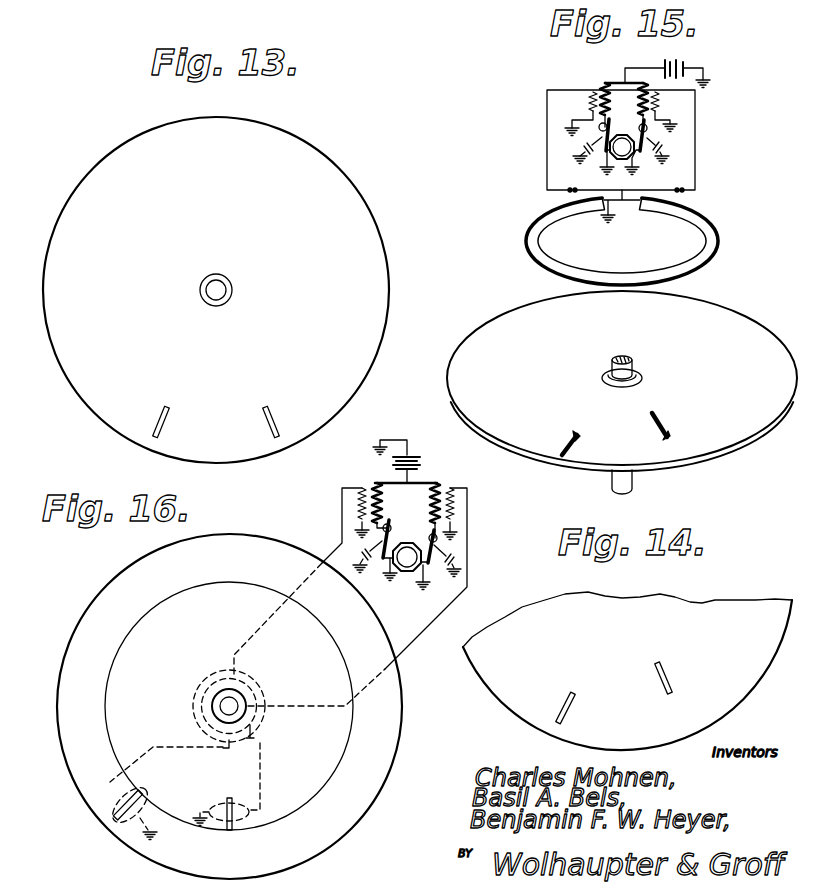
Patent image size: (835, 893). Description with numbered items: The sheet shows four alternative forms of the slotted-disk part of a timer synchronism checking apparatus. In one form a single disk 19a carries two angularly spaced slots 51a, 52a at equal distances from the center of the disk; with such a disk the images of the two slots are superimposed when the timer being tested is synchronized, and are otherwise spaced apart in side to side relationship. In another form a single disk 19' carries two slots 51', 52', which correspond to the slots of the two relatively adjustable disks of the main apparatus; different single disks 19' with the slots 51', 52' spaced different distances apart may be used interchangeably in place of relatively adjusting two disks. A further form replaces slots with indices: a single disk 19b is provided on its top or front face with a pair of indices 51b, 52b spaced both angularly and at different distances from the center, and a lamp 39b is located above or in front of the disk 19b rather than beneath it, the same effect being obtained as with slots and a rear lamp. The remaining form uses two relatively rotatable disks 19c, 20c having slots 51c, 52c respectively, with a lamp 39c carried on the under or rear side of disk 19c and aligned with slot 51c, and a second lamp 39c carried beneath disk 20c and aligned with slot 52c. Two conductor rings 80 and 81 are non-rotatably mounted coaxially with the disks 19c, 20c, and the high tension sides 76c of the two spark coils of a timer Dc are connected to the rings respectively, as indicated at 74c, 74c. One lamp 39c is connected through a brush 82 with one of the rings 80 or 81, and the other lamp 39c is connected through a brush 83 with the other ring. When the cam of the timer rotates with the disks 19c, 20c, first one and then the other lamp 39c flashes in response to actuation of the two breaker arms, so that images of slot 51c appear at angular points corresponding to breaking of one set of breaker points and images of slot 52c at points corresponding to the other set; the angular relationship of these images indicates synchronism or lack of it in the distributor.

In FIG. 13, the single disk 19a is at (216, 290).
In FIG. 13, the slot 51a is at (165, 411).
In FIG. 13, the slot 52a is at (269, 411).
In FIG. 15, the lamp 39b is at (615, 276).
In FIG. 15, the single disk 19b is at (622, 392).
In FIG. 15, the index 51b is at (563, 447).
In FIG. 15, the index 52b is at (657, 420).
In FIG. 16, the disk 19c is at (357, 795).
In FIG. 16, the disk 20c is at (229, 706).
In FIG. 16, the conductor ring 80 is at (205, 683).
In FIG. 16, the conductor ring 81 is at (213, 706).
In FIG. 16, the brush 82 is at (225, 757).
In FIG. 16, the brush 83 is at (250, 735).
In FIG. 16, the connection 74c is at (303, 582).
In FIG. 16, the timer Dc is at (407, 515).
In FIG. 16, the high tension side of spark coil 76c is at (358, 505).
In FIG. 16, the lamp 39c is at (112, 802).
In FIG. 16, the slot 51c is at (120, 827).
In FIG. 16, the slot 52c is at (233, 806).
In FIG. 14, the single disk 19' is at (627, 671).
In FIG. 14, the slot 51' is at (550, 699).
In FIG. 14, the slot 52' is at (685, 678).